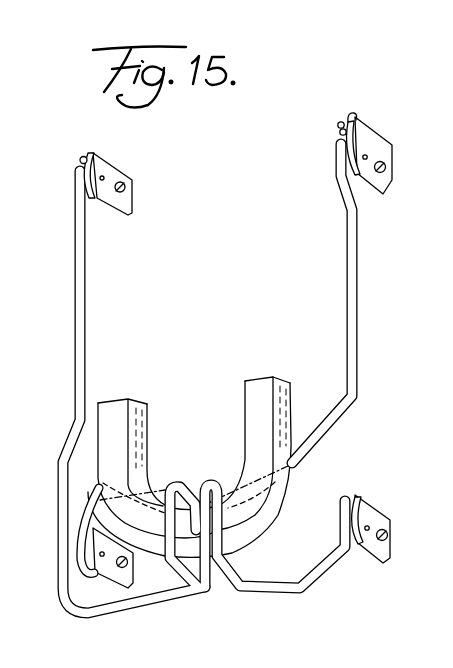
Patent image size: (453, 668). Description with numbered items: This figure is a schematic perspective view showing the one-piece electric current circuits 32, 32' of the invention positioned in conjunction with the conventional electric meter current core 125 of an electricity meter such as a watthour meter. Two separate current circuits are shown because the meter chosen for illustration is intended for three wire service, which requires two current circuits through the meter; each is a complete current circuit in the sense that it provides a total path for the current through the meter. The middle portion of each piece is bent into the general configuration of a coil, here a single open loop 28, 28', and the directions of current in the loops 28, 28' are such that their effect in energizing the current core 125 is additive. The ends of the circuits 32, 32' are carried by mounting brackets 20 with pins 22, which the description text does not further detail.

The mounting bracket 20 is at (117, 178).
The pivot pin 22 is at (79, 157).
The open loop 28 is at (274, 509).
The open loop 28' is at (176, 505).
The one-piece electric current circuit 32 is at (317, 303).
The one-piece electric current circuit 32' is at (134, 392).
The electric meter current core 125 is at (260, 393).